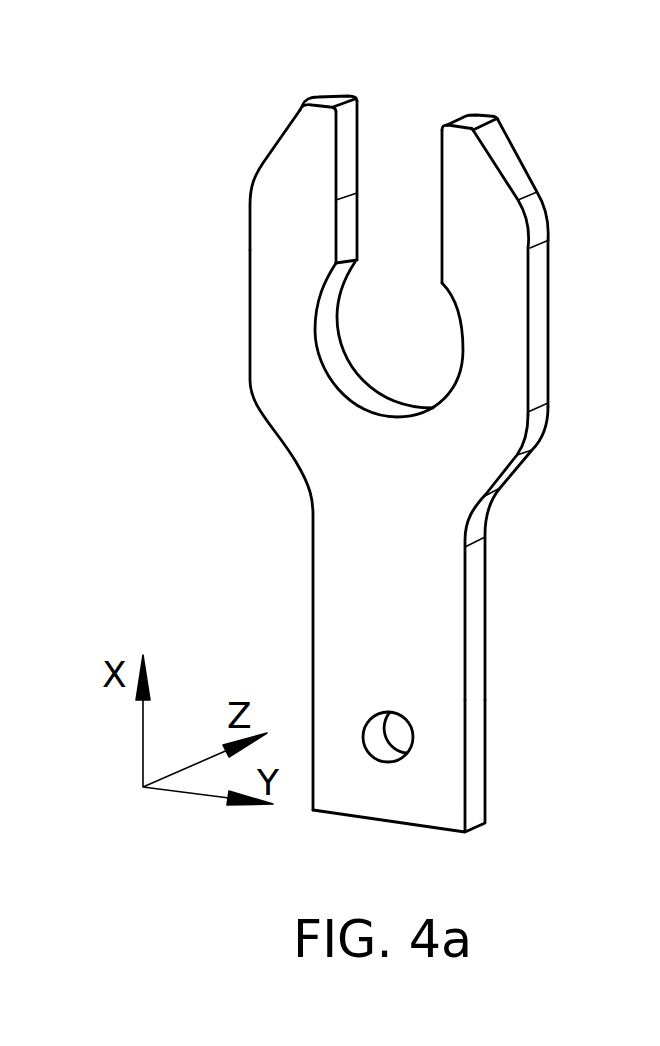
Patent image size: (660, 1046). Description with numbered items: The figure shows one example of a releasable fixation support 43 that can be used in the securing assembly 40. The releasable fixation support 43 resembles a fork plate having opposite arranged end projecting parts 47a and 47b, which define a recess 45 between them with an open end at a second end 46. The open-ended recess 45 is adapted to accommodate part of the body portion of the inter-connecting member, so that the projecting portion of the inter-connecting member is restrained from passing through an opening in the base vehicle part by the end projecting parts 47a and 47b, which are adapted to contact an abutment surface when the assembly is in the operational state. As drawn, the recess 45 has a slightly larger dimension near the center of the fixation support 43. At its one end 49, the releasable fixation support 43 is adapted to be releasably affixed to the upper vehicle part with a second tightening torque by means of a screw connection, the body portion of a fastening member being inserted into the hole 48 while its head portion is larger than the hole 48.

The securing assembly 40 is at (368, 530).
The releasable fixation support 43 is at (340, 472).
The recess 45 is at (395, 153).
The second end 46 is at (316, 126).
The end projecting part 47a is at (283, 233).
The end projecting part 47b is at (487, 240).
The hole 48 is at (395, 737).
The one end 49 is at (378, 790).